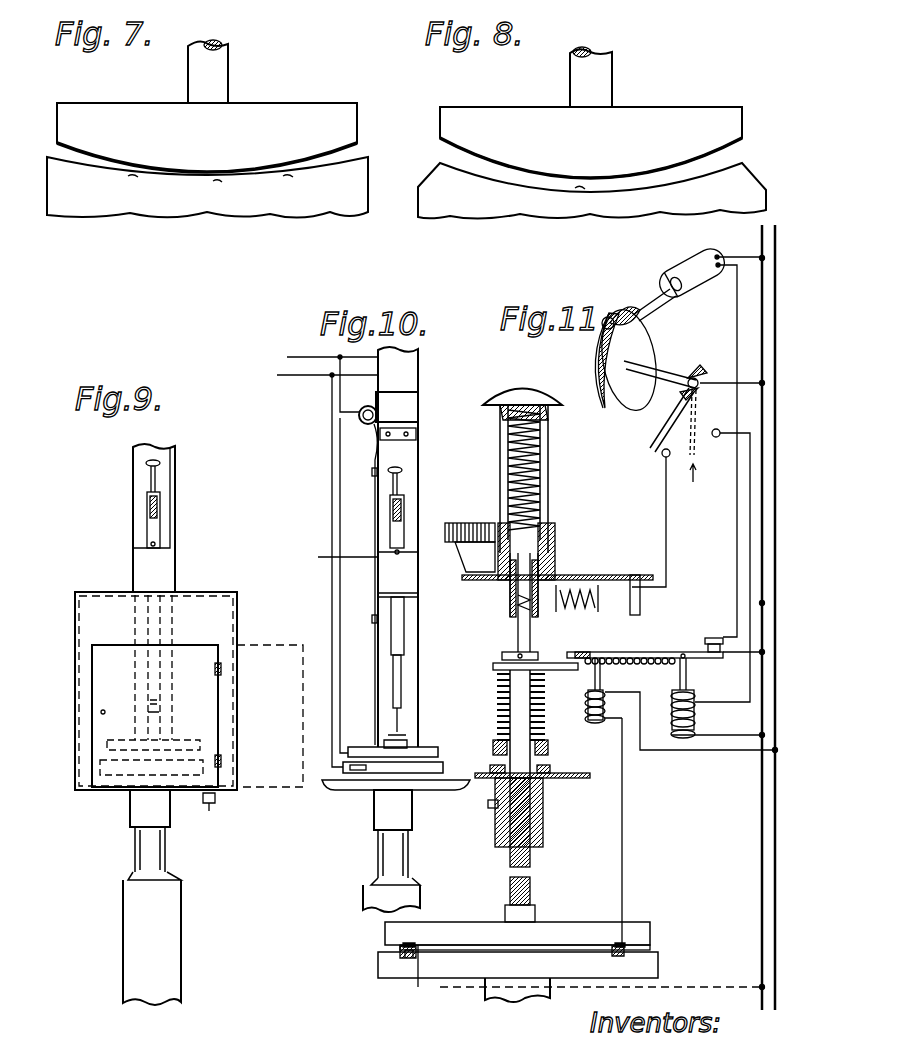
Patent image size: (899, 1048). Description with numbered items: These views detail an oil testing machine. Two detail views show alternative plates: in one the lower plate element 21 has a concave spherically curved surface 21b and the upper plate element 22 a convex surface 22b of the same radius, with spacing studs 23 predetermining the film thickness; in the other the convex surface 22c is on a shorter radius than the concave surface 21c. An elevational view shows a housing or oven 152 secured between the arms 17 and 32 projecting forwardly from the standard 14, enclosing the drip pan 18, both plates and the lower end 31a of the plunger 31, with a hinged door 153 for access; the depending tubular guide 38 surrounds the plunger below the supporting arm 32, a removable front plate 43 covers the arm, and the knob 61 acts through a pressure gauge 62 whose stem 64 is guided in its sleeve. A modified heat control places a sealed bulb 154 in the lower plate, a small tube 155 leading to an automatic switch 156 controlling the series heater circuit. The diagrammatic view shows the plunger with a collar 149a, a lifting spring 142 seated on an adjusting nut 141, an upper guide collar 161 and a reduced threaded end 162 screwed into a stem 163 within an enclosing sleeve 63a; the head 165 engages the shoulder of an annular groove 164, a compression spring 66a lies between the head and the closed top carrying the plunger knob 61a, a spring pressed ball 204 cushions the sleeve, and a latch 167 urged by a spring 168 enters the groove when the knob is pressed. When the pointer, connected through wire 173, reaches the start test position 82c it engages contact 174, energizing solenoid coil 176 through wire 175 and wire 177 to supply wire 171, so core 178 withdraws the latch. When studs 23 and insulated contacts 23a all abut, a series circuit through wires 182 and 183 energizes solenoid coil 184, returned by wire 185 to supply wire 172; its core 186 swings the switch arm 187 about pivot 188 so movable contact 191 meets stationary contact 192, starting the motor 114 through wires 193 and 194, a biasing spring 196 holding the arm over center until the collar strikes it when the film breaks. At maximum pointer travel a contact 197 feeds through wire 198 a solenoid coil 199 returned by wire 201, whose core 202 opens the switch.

In FIG. 9, the base column 14 is at (123, 905).
In FIG. 10, the base column 14 is at (363, 890).
In FIG. 9, the arm 17 is at (170, 815).
In FIG. 10, the arm 17 is at (412, 818).
In FIG. 9, the drip pan 18 is at (75, 800).
In FIG. 10, the drip pan 18 is at (322, 787).
In FIG. 7, the lower plate element 21 is at (52, 195).
In FIG. 8, the lower plate element 21 is at (427, 220).
In FIG. 9, the lower plate element 21 is at (95, 770).
In FIG. 10, the lower plate element 21 is at (443, 768).
In FIG. 11, the lower plate element 21 is at (378, 963).
In FIG. 7, the concave spherically curved surface 21b is at (218, 183).
In FIG. 8, the concave spherically formed surface 21c is at (580, 188).
In FIG. 7, the upper plate element 22 is at (60, 114).
In FIG. 8, the upper plate element 22 is at (447, 125).
In FIG. 9, the upper plate element 22 is at (95, 746).
In FIG. 10, the upper plate element 22 is at (357, 748).
In FIG. 11, the upper plate element 22 is at (385, 933).
In FIG. 7, the convex spherically curved surface 22b is at (180, 170).
In FIG. 8, the convex spherically formed surface 22c is at (542, 178).
In FIG. 7, the spacing studs 23 is at (133, 178).
In FIG. 11, the spacing studs 23 is at (420, 952).
In FIG. 11, the studs or contacts 23a is at (410, 944).
In FIG. 9, the plunger 31 is at (158, 670).
In FIG. 10, the plunger 31 is at (399, 681).
In FIG. 11, the plunger 31 is at (532, 892).
In FIG. 9, the rod foot 31a is at (158, 710).
In FIG. 10, the rod foot 31a is at (401, 718).
In FIG. 9, the supporting arm 32 is at (177, 560).
In FIG. 10, the supporting arm 32 is at (410, 574).
In FIG. 11, the supporting arm 32 is at (628, 575).
In FIG. 9, the tubular guide 38 is at (158, 612).
In FIG. 10, the tubular guide 38 is at (400, 651).
In FIG. 9, the removable front plate 43 is at (145, 560).
In FIG. 10, the removable front plate 43 is at (392, 585).
In FIG. 9, the upper knob 61 is at (150, 462).
In FIG. 10, the upper knob 61 is at (403, 470).
In FIG. 11, the plunger knob 61a is at (518, 385).
In FIG. 9, the pressure gauge 62 is at (147, 510).
In FIG. 10, the pressure gauge 62 is at (405, 515).
In FIG. 11, the enclosing sleeve 63a is at (548, 462).
In FIG. 9, the stem 64 is at (160, 468).
In FIG. 11, the compression spring 66a is at (505, 440).
In FIG. 11, the start test position 82c is at (662, 455).
In FIG. 11, the motor 114 is at (700, 262).
In FIG. 11, the nut 141 is at (495, 745).
In FIG. 11, the spring 142 is at (502, 706).
In FIG. 11, the collar 149a is at (563, 672).
In FIG. 9, the housing or oven 152 is at (82, 597).
In FIG. 9, the hinged door 153 is at (276, 652).
In FIG. 10, the sealed bulb 154 is at (354, 791).
In FIG. 10, the small tube 155 is at (303, 550).
In FIG. 10, the automatic switch 156 is at (408, 402).
In FIG. 11, the upper guide collar 161 is at (510, 612).
In FIG. 11, the reduced threaded end 162 is at (512, 598).
In FIG. 11, the stem 163 is at (545, 540).
In FIG. 11, the annular groove 164 is at (558, 548).
In FIG. 11, the head 165 is at (552, 520).
In FIG. 11, the latch 167 is at (556, 572).
In FIG. 11, the spring 168 is at (562, 582).
In FIG. 11, the main supply wire 171 is at (762, 797).
In FIG. 11, the supply wire 172 is at (775, 826).
In FIG. 11, the wire 173 is at (722, 380).
In FIG. 11, the contact 174 is at (675, 435).
In FIG. 11, the wire 175 is at (666, 520).
In FIG. 11, the solenoid coil 176 is at (625, 575).
In FIG. 11, the wire 177 is at (692, 600).
In FIG. 11, the core 178 is at (578, 612).
In FIG. 11, the wire 182 is at (452, 987).
In FIG. 11, the wire 183 is at (622, 866).
In FIG. 11, the solenoid coil 184 is at (584, 728).
In FIG. 11, the wire 185 is at (670, 751).
In FIG. 11, the core 186 is at (606, 694).
In FIG. 11, the switch arm 187 is at (640, 652).
In FIG. 11, the pivot 188 is at (650, 656).
In FIG. 11, the movable contact 191 is at (712, 656).
In FIG. 11, the stationary contact 192 is at (722, 632).
In FIG. 11, the wire 193 is at (741, 656).
In FIG. 11, the wire 194 is at (737, 522).
In FIG. 11, the biasing spring 196 is at (616, 650).
In FIG. 11, the contact 197 is at (714, 428).
In FIG. 11, the wire 198 is at (750, 488).
In FIG. 11, the solenoid coil 199 is at (698, 730).
In FIG. 11, the wire 201 is at (725, 751).
In FIG. 11, the core 202 is at (672, 708).
In FIG. 11, the spring pressed ball 204 is at (488, 524).